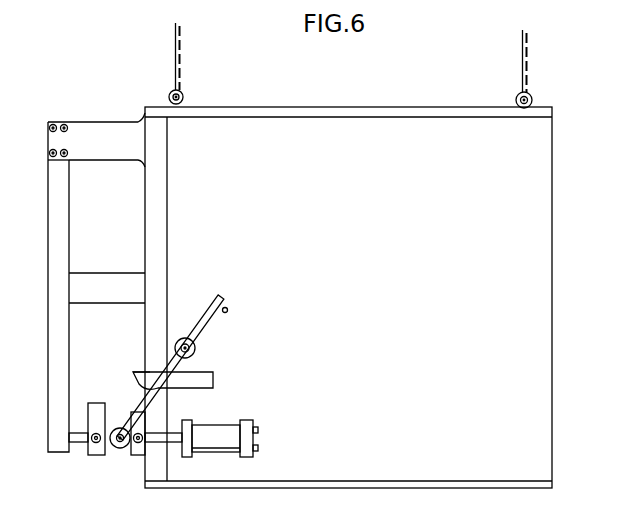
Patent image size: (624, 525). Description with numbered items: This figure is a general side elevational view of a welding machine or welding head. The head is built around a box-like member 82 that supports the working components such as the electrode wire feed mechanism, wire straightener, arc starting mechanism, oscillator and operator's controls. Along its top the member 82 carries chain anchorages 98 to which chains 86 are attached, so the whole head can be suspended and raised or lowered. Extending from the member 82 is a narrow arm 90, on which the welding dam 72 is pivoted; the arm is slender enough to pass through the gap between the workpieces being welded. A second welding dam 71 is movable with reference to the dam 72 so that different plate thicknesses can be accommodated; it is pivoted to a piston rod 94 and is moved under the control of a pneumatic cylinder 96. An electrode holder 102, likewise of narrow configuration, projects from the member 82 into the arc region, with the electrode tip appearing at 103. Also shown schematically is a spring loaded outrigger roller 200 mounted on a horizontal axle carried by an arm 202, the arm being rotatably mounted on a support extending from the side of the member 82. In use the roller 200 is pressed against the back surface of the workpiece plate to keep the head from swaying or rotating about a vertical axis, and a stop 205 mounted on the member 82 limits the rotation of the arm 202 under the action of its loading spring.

The welding dam 71 is at (137, 457).
The welding dam 72 is at (96, 456).
The box-like member 82 is at (364, 248).
The chains 86 is at (174, 38).
The arm 90 is at (53, 318).
The piston rod 94 is at (170, 437).
The pneumatic cylinder 96 is at (245, 441).
The chain anchorages 98 is at (169, 96).
The electrode holder 102 is at (127, 368).
The electrode tip 103 is at (128, 393).
The outrigger rollers 200 is at (118, 448).
The arms 202 is at (180, 362).
The stops 205 is at (228, 310).